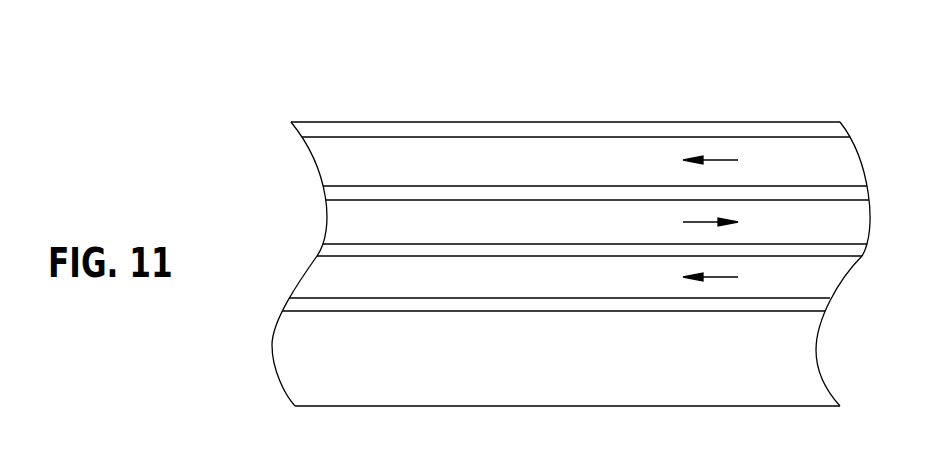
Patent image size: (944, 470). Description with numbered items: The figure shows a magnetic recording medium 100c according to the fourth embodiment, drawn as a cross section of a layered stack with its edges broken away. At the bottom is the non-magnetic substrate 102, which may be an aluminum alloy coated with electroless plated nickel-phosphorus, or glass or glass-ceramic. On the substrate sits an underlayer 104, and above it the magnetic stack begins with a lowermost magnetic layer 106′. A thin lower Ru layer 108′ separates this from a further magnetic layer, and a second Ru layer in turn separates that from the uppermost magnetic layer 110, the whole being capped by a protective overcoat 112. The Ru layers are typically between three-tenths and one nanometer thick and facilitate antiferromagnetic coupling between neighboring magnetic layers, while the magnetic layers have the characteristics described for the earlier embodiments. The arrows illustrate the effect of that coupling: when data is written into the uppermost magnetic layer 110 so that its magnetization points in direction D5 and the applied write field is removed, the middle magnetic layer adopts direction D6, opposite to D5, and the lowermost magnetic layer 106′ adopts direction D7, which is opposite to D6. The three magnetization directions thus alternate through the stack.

The medium 100c is at (771, 72).
The non-magnetic substrate 102 is at (802, 361).
The underlayer 104 is at (397, 305).
The lowermost magnetic layer 106′ is at (463, 280).
The lower Ru layer 108′ is at (545, 250).
The uppermost magnetic layer 110 is at (497, 159).
The protective overcoat 112 is at (553, 130).
The magnetization direction D5 is at (727, 160).
The magnetization direction D6 is at (692, 222).
The magnetization direction D7 is at (712, 277).